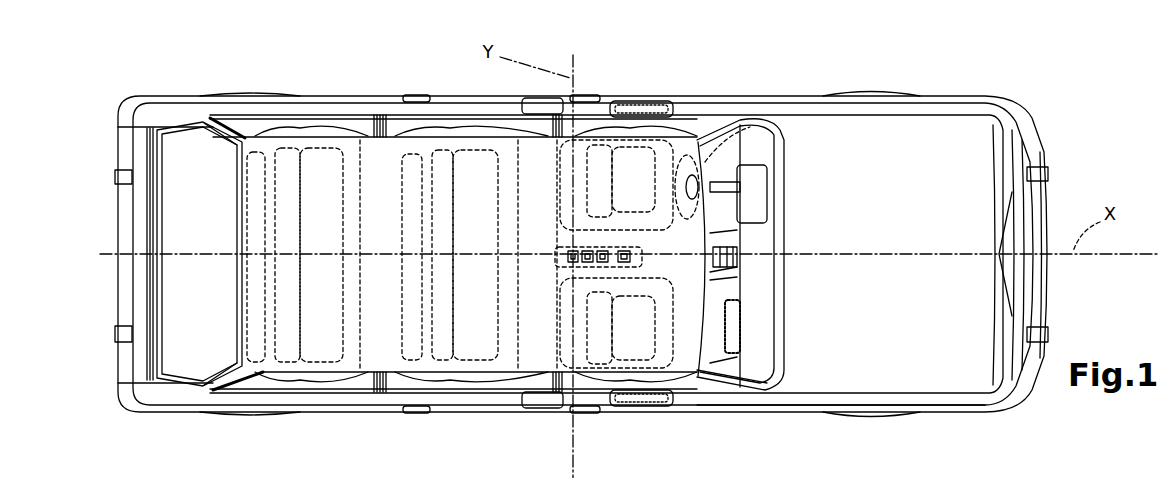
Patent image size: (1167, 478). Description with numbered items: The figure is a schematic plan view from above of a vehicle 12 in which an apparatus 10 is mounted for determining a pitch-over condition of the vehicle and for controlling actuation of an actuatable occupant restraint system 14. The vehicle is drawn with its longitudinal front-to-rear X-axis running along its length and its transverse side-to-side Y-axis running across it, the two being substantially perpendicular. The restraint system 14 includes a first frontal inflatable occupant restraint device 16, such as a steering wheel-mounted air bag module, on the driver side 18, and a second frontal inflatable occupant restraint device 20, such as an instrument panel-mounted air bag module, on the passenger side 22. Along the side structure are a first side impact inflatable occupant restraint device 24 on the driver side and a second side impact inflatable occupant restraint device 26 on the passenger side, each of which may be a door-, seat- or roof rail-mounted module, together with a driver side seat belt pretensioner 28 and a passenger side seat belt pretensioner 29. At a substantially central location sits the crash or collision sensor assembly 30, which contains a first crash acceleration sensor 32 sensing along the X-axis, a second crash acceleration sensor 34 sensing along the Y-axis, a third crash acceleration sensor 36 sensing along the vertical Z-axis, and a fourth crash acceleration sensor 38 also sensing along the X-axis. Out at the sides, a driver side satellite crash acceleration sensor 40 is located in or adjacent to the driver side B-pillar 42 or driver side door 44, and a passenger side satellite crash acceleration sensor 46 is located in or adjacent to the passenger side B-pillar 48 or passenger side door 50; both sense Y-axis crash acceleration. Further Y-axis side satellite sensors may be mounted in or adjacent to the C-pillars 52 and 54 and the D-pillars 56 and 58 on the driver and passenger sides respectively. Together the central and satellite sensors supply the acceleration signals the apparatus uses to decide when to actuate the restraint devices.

The apparatus 10 is at (422, 72).
The vehicle 12 is at (942, 424).
The actuatable occupant restraint system 14 is at (716, 436).
The first frontal inflatable occupant restraint device 16 is at (781, 113).
The driver side 18 is at (700, 233).
The second frontal inflatable occupant restraint device 20 is at (742, 327).
The passenger side 22 is at (762, 375).
The first side impact inflatable occupant restraint device 24 is at (638, 96).
The second side impact inflatable occupant restraint device 26 is at (631, 410).
The driver side seat belt pretensioner 28 is at (657, 108).
The passenger side seat belt pretensioner 29 is at (617, 378).
The crash or collision sensor assembly 30 is at (548, 274).
The first crash acceleration sensor 32 is at (570, 249).
The second crash acceleration sensor 34 is at (587, 249).
The third crash acceleration sensor 36 is at (607, 249).
The fourth crash acceleration sensor 38 is at (624, 263).
The driver side satellite crash acceleration sensor 40 is at (543, 108).
The driver side vehicle B-pillar 42 is at (551, 125).
The driver side door 44 is at (698, 96).
The passenger side satellite crash acceleration sensor 46 is at (538, 401).
The passenger side B-pillar 48 is at (530, 382).
The passenger side door 50 is at (667, 404).
The C-pillar 52 is at (378, 118).
The C-pillar 54 is at (377, 397).
The D-pillar 56 is at (232, 127).
The D-pillar 58 is at (232, 383).